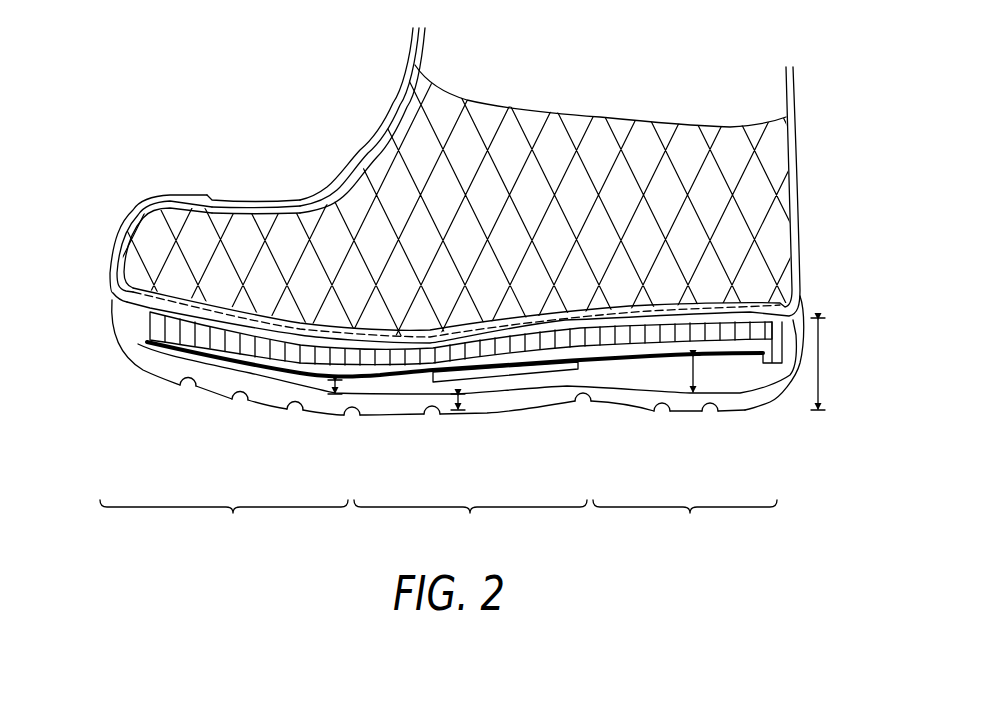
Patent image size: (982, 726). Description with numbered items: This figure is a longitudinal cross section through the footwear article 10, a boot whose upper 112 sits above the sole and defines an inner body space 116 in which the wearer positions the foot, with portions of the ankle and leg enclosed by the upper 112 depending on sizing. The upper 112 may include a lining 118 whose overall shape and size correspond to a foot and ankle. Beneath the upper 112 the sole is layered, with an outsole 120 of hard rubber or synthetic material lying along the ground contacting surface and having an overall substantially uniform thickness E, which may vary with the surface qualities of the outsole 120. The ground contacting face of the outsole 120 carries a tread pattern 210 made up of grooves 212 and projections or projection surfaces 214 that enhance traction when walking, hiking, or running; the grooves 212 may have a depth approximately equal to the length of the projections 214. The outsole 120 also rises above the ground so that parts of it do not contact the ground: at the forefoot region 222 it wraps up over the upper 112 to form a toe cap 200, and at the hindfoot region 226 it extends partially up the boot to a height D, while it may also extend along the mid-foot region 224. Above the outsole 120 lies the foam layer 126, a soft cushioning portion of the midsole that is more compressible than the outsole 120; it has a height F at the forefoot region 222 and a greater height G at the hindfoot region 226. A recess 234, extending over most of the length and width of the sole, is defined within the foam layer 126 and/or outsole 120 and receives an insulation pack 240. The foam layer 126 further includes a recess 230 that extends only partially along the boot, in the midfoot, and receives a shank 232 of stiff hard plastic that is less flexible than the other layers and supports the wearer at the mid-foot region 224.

The article of footwear 10 is at (225, 82).
The upper 112 is at (300, 197).
The inner body space 116 is at (643, 147).
The lining 118 is at (377, 142).
The outsole 120 is at (758, 399).
The foam layer 126 is at (732, 374).
The toe cap 200 is at (140, 200).
The tread pattern 210 is at (146, 411).
The grooves 212 is at (242, 399).
The projections 214 is at (325, 411).
The forefoot region 222 is at (224, 523).
The mid-foot region 224 is at (470, 523).
The hindfoot region 226 is at (685, 522).
The recess 230 is at (567, 373).
The shank 232 is at (533, 372).
The recess 234 is at (148, 341).
The insulation pack 240 is at (790, 338).
The height D is at (825, 386).
The thickness E is at (461, 402).
The height F is at (338, 396).
The height G is at (694, 376).